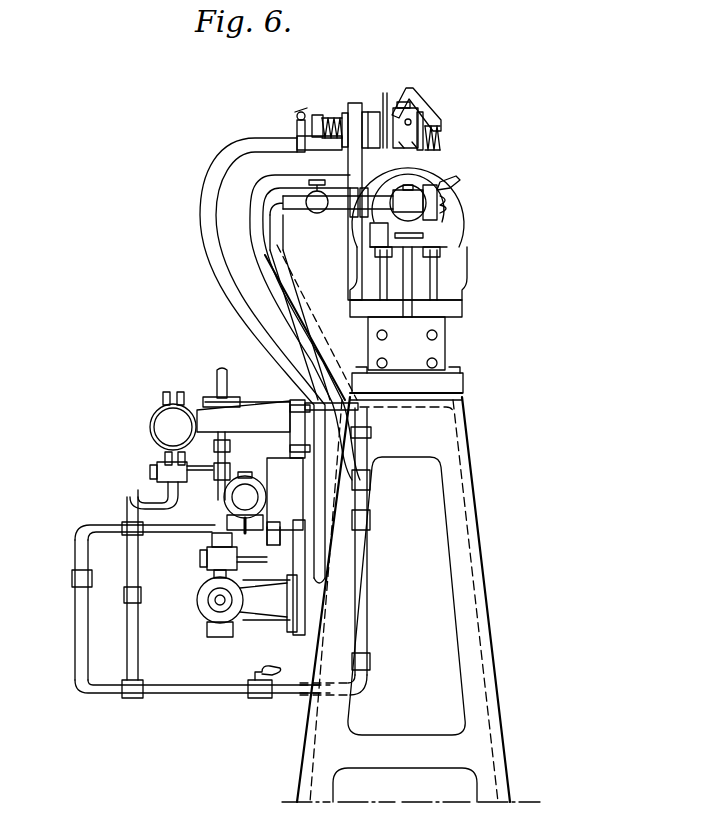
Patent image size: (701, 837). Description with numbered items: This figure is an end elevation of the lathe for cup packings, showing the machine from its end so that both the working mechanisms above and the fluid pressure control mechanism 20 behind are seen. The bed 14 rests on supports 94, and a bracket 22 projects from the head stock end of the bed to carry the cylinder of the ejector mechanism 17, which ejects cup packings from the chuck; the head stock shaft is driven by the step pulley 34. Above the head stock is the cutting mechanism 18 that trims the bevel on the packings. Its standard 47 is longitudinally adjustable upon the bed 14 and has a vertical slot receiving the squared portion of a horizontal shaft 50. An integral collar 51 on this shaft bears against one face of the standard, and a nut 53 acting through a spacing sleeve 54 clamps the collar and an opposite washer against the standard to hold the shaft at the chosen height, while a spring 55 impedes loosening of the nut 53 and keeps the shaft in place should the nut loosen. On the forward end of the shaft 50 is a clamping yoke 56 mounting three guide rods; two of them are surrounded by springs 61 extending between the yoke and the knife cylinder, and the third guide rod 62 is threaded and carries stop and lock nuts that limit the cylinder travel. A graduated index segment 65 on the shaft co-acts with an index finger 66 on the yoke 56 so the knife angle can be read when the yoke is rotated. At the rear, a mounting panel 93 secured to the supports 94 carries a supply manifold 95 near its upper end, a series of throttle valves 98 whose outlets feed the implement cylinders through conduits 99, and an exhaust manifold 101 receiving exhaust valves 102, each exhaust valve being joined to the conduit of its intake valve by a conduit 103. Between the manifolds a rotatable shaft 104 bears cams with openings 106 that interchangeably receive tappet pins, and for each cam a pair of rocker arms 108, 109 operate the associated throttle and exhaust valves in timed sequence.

The bed 14 is at (465, 384).
The ejector mechanism 17 is at (418, 226).
The cutting mechanism 18 is at (434, 98).
The fluid pressure control mechanism 20 is at (150, 402).
The bracket 22 is at (420, 283).
The step pulley 34 is at (430, 170).
The standard 47 is at (355, 245).
The shaft 50 is at (300, 100).
The collar 51 is at (363, 196).
The nut 53 is at (317, 115).
The spacing sleeve 54 is at (330, 140).
The spring 55 is at (334, 118).
The clamping yoke 56 is at (435, 128).
The springs 61 is at (441, 147).
The third guide rod 62 is at (412, 95).
The index segment 65 is at (384, 108).
The index finger 66 is at (395, 108).
The mounting panel 93 is at (312, 497).
The supports 94 is at (455, 514).
The supply manifold 95 is at (162, 427).
The throttle valves 98 is at (160, 475).
The conduit 99 is at (128, 628).
The exhaust manifold 101 is at (208, 604).
The exhaust valves 102 is at (208, 560).
The conduit 103 is at (78, 612).
The shaft 104 is at (250, 496).
The openings 106 is at (210, 240).
The rocker arm 108 is at (222, 462).
The rocker arm 109 is at (273, 548).